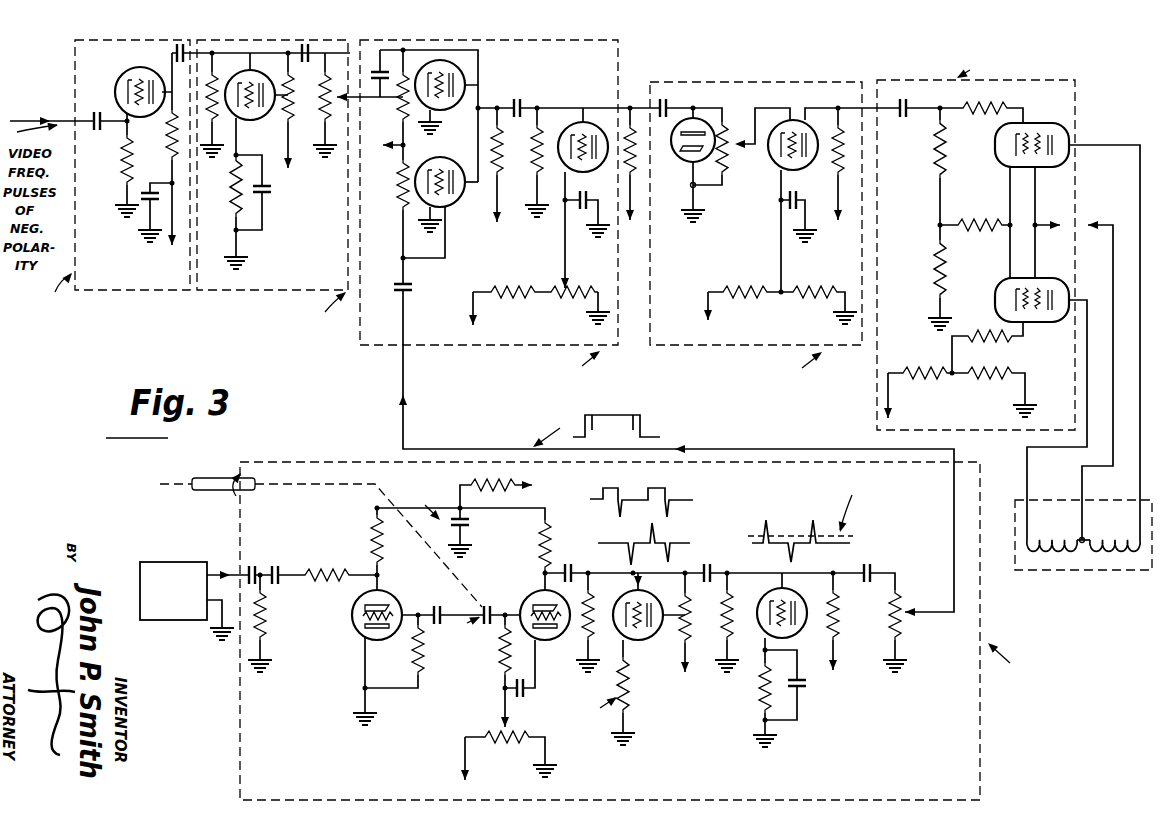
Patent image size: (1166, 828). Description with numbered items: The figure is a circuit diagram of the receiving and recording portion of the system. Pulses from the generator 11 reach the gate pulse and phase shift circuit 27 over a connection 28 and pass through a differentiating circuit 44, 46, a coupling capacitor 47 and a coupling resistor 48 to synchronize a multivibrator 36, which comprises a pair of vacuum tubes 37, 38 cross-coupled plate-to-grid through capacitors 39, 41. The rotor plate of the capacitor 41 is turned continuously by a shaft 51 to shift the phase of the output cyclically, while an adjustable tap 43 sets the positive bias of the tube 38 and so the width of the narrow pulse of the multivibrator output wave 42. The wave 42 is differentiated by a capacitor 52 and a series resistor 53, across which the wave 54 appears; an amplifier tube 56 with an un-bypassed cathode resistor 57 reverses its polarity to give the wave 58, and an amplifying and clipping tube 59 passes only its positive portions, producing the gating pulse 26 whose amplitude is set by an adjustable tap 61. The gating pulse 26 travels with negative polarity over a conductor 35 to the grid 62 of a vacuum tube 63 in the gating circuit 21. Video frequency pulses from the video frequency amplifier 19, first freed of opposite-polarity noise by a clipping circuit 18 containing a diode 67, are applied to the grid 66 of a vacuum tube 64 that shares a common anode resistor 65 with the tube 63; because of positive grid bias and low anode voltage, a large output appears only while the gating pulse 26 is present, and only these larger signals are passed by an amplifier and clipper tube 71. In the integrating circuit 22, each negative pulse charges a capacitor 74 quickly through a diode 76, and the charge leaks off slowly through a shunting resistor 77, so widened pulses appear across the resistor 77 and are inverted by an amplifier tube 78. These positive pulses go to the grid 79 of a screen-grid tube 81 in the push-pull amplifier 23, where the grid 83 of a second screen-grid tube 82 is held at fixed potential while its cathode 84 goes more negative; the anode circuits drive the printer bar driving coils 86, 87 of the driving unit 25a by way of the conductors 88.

The clipping circuit 18 is at (75, 63).
The diode 67 is at (122, 82).
The video frequency amplifier 19 is at (219, 294).
The gating circuit 21 is at (360, 330).
The grid 66 is at (462, 52).
The vacuum tube 64 is at (436, 112).
The vacuum tube 63 is at (463, 172).
The grid 62 is at (446, 200).
The common anode resistor 65 is at (494, 172).
The amplifier and clipper tube 71 is at (585, 120).
The capacitor 74 is at (665, 97).
The integrating circuit 22 is at (746, 84).
The diode 76 is at (684, 161).
The resistor 77 is at (738, 123).
The amplifier tube 78 is at (806, 120).
The push-pull amplifier 23 is at (912, 78).
The grid 79 is at (1025, 128).
The screen-grid tube 81 is at (1003, 150).
The second screen-grid tube 82 is at (1068, 286).
The cathode 84 is at (1003, 293).
The grid 83 is at (1028, 318).
The conductors 88 is at (1141, 414).
The printer bar driving coil 87 is at (1062, 532).
The printer bar driving coil 86 is at (1124, 532).
The driving unit 25a is at (1133, 573).
The gate pulse and phase shift circuit 27 is at (312, 462).
The shaft 51 is at (208, 478).
The multivibrator 36 is at (509, 561).
The generator 11 is at (173, 561).
The connection 28 is at (213, 572).
The differentiating circuit 44 is at (252, 565).
The coupling capacitor 47 is at (281, 586).
The differentiating circuit 46 is at (265, 641).
The coupling resistor 48 is at (331, 566).
The vacuum tube 37 is at (356, 626).
The capacitor 39 is at (436, 604).
The capacitor 41 is at (489, 630).
The vacuum tube 38 is at (527, 603).
The resistor 53 is at (527, 686).
The tap 43 is at (500, 720).
The capacitor 52 is at (549, 569).
The amplifier tube 56 is at (631, 593).
The resistor 57 is at (633, 682).
The multivibrator output wave 42 is at (666, 497).
The wave 54 is at (663, 541).
The reversed polarity wave 58 is at (759, 570).
The amplifying and clipping tube 59 is at (786, 576).
The adjustable tap 61 is at (908, 605).
The conductor 35 is at (777, 449).
The gating pulse 26 is at (630, 421).